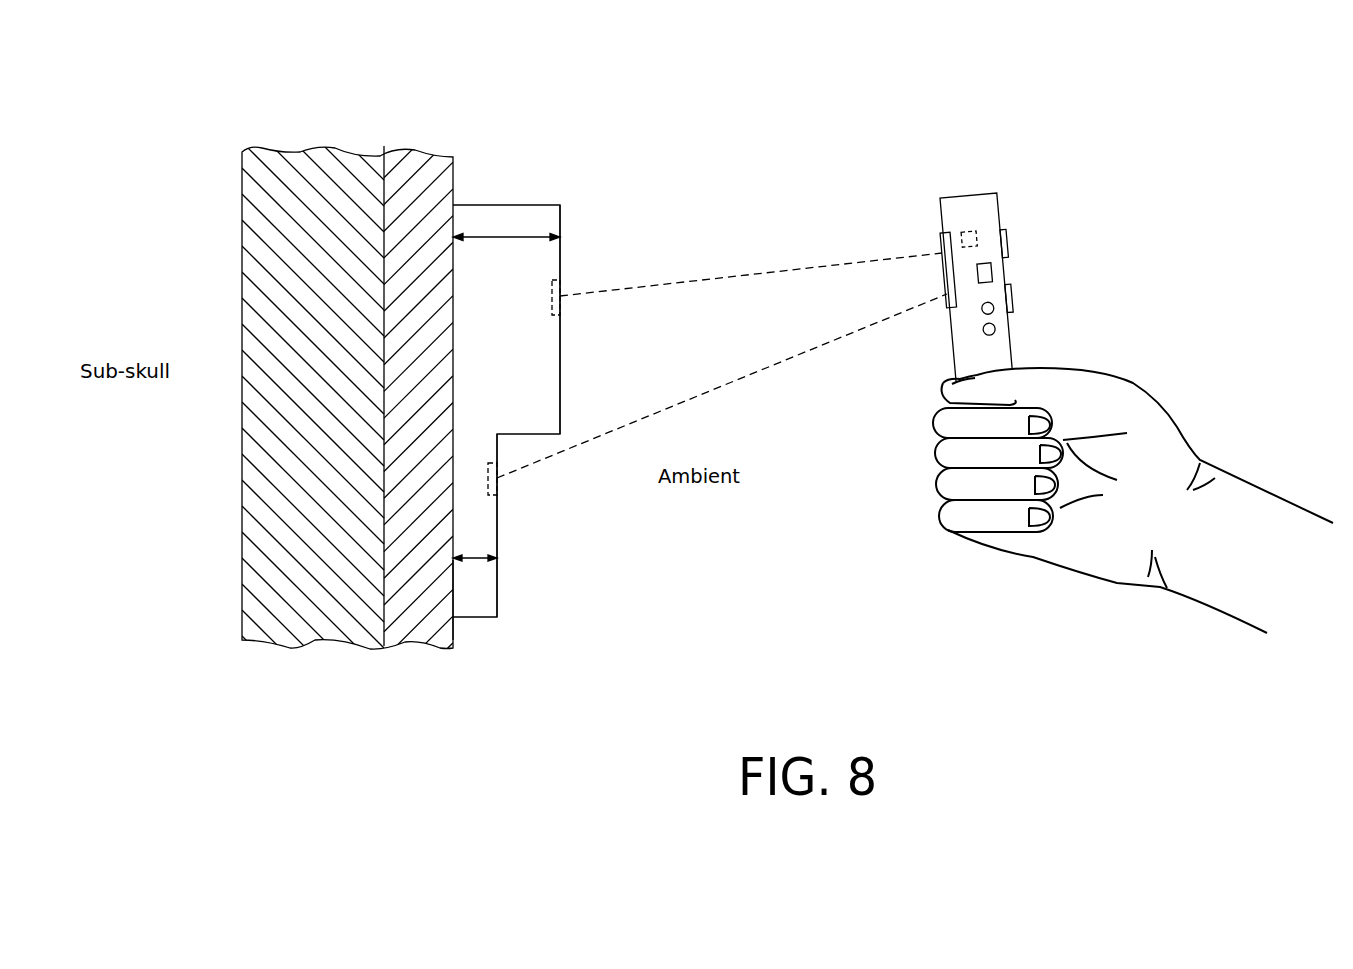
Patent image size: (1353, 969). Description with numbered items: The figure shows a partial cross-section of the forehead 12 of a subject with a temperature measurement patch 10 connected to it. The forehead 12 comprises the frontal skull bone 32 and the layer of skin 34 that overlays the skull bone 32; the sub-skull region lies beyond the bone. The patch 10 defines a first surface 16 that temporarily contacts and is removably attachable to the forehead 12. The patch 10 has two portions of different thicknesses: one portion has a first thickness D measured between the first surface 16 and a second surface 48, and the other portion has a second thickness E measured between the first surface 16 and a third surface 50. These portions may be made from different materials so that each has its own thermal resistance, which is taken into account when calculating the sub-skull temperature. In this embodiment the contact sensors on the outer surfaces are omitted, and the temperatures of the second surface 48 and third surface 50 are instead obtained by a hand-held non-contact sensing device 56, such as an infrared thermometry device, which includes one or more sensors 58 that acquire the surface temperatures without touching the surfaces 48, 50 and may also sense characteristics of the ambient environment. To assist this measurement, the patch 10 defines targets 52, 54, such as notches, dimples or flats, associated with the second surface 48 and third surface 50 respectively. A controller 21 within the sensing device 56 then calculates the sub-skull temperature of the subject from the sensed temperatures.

The patch 10 is at (490, 205).
The forehead 12 is at (452, 122).
The first surface 16 is at (452, 588).
The controller 21 is at (963, 230).
The frontal skull bone 32 is at (308, 648).
The layer of skin 34 is at (416, 650).
The second surface 48 is at (497, 542).
The third surface 50 is at (560, 356).
The target 52 is at (490, 484).
The target 54 is at (552, 297).
The non-contact sensing device 56 is at (995, 195).
The sensor 58 is at (941, 246).
The second thickness E is at (525, 236).
The first thickness D is at (476, 562).